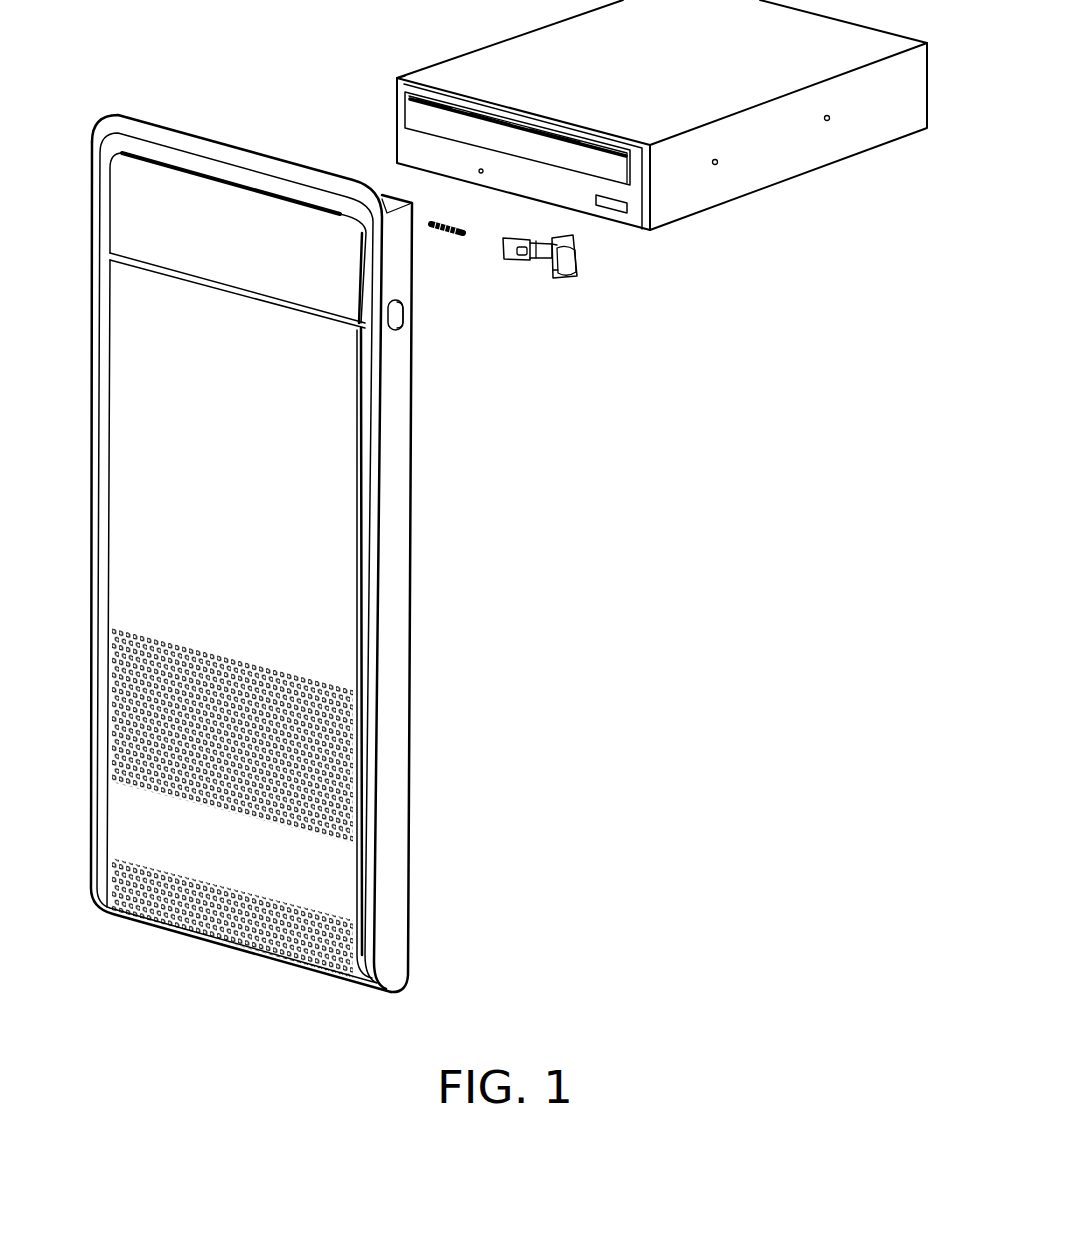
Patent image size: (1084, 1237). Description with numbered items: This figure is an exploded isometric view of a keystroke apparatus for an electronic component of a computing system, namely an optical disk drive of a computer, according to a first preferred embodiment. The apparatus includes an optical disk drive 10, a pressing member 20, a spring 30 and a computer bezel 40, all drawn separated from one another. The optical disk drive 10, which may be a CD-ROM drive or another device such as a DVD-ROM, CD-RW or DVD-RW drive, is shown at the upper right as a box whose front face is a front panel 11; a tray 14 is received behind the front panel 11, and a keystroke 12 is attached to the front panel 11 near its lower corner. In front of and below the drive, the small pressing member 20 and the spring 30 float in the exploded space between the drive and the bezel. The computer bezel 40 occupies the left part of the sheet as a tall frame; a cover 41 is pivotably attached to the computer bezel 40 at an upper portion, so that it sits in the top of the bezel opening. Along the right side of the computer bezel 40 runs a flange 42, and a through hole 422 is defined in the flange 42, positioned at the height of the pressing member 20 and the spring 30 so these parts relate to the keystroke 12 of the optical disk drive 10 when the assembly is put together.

The optical disk drive 10 is at (802, 185).
The front panel 11 is at (640, 188).
The keystroke 12 is at (609, 207).
The tray 14 is at (418, 107).
The pressing member 20 is at (567, 262).
The spring 30 is at (448, 221).
The computer bezel 40 is at (430, 484).
The cover 41 is at (157, 197).
The flange 42 is at (398, 407).
The through hole 422 is at (404, 317).